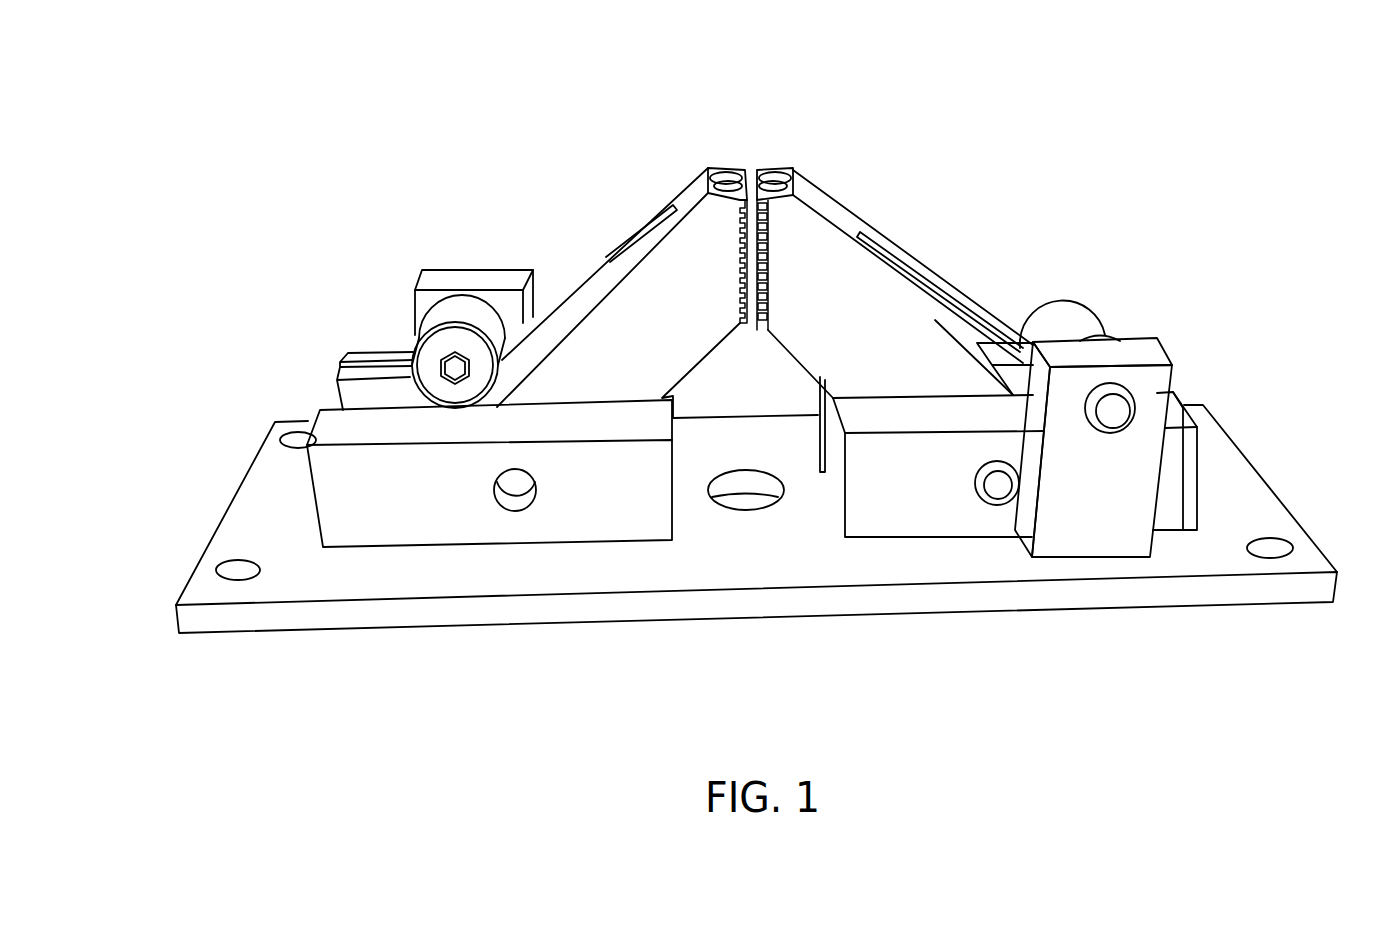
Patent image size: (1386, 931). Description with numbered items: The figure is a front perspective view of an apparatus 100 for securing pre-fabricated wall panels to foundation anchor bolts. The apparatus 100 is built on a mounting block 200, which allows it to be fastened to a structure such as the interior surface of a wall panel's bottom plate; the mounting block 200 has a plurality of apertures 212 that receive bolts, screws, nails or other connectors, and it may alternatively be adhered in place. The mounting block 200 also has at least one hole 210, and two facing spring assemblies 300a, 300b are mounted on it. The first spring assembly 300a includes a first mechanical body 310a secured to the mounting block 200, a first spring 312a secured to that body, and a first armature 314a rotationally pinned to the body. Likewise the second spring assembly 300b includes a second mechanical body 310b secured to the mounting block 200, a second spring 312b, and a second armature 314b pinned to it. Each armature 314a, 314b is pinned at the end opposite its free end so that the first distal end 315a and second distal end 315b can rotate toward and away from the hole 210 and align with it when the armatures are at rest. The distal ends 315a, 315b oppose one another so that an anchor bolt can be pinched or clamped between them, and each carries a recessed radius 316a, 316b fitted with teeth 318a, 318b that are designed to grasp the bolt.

The apparatus 100 is at (256, 156).
The mounting block 200 is at (315, 615).
The hole 210 is at (762, 503).
The apertures 212 is at (300, 435).
The first spring assembly 300a is at (993, 220).
The second spring assembly 300b is at (545, 232).
The first mechanical body 310a is at (927, 498).
The second mechanical body 310b is at (438, 527).
The first spring 312a is at (1082, 315).
The second spring 312b is at (457, 310).
The first armature 314a is at (887, 347).
The second armature 314b is at (635, 310).
The first distal end 315a is at (808, 158).
The second distal end 315b is at (703, 158).
The recessed radius 316a is at (768, 175).
The recessed radius 316b is at (737, 175).
The teeth 318a is at (763, 307).
The teeth 318b is at (748, 177).